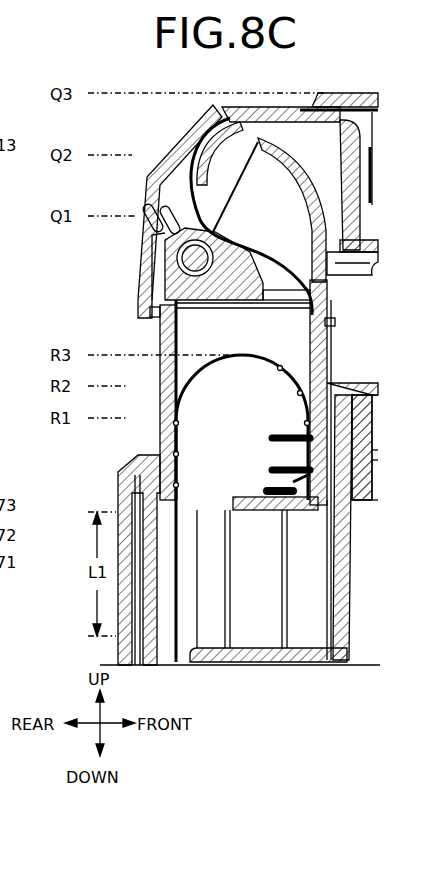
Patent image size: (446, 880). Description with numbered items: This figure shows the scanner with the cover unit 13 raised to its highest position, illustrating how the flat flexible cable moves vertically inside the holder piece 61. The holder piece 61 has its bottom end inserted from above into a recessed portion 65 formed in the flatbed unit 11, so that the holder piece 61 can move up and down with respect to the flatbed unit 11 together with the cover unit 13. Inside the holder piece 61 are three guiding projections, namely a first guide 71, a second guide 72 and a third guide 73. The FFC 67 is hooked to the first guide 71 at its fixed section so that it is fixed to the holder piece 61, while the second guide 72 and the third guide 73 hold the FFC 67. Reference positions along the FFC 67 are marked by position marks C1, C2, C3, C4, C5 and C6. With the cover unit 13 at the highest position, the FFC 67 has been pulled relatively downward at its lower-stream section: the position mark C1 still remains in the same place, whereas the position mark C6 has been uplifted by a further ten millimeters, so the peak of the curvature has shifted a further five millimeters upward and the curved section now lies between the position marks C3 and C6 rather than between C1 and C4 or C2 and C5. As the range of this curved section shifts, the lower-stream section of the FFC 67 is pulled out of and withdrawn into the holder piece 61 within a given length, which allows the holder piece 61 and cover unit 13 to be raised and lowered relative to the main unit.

The flatbed unit 11 is at (118, 472).
The cover unit 13 is at (350, 96).
The holder piece 61 is at (165, 277).
The recessed portion 65 is at (257, 648).
The FFC 67 is at (223, 232).
The first guide 71 is at (300, 495).
The second guide 72 is at (303, 470).
The third guide 73 is at (303, 436).
The position mark C1 is at (180, 485).
The position mark C2 is at (180, 454).
The position mark C3 is at (180, 423).
The position mark C4 is at (277, 369).
The position mark C5 is at (297, 393).
The position mark C6 is at (304, 423).